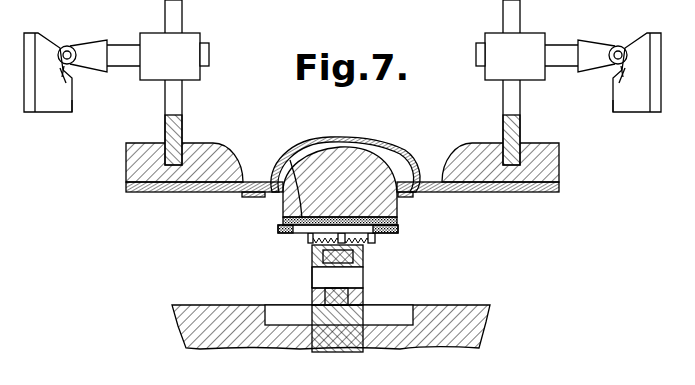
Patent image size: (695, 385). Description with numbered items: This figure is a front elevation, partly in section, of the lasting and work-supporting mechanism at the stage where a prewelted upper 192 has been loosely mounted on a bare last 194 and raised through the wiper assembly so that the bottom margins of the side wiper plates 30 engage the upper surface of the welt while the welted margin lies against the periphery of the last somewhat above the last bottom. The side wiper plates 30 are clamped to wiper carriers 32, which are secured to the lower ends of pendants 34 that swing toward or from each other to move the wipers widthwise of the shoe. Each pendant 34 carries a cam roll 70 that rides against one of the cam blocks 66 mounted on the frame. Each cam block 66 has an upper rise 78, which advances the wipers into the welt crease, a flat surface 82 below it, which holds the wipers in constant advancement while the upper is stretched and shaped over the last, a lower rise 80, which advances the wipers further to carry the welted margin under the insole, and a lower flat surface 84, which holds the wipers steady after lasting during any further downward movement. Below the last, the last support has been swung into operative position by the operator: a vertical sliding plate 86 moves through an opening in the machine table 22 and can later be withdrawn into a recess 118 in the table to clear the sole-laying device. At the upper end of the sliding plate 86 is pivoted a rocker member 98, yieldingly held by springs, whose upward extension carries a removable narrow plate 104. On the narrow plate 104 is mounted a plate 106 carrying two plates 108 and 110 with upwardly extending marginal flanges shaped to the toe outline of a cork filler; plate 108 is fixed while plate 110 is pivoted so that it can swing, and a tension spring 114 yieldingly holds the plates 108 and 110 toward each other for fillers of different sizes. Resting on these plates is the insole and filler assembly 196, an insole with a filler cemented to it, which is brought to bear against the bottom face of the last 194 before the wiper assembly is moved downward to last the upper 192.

The machine table 22 is at (467, 305).
The side wiper plates 30 is at (251, 192).
The wiper carriers 32 is at (214, 145).
The pendants 34 is at (181, 98).
The cam blocks 66 is at (42, 113).
The cam roll 70 is at (68, 46).
The rise 78 is at (73, 72).
The rise 80 is at (65, 84).
The flat surface 82 is at (72, 78).
The flat surface 84 is at (75, 107).
The sliding plate 86 is at (348, 348).
The rocker member 98 is at (312, 270).
The narrow plate 104 is at (363, 256).
The plate 106 is at (281, 230).
The plate 108 is at (394, 228).
The plate 110 is at (282, 229).
The tension spring 114 is at (315, 243).
The recess 118 is at (390, 317).
The upper 192 is at (310, 137).
The last 194 is at (366, 148).
The insole and filler assembly 196 is at (290, 160).